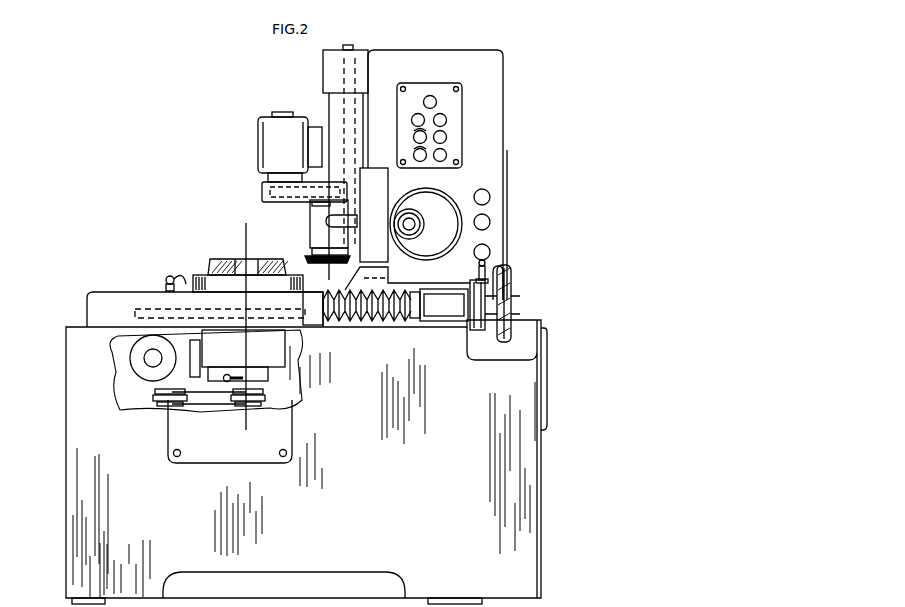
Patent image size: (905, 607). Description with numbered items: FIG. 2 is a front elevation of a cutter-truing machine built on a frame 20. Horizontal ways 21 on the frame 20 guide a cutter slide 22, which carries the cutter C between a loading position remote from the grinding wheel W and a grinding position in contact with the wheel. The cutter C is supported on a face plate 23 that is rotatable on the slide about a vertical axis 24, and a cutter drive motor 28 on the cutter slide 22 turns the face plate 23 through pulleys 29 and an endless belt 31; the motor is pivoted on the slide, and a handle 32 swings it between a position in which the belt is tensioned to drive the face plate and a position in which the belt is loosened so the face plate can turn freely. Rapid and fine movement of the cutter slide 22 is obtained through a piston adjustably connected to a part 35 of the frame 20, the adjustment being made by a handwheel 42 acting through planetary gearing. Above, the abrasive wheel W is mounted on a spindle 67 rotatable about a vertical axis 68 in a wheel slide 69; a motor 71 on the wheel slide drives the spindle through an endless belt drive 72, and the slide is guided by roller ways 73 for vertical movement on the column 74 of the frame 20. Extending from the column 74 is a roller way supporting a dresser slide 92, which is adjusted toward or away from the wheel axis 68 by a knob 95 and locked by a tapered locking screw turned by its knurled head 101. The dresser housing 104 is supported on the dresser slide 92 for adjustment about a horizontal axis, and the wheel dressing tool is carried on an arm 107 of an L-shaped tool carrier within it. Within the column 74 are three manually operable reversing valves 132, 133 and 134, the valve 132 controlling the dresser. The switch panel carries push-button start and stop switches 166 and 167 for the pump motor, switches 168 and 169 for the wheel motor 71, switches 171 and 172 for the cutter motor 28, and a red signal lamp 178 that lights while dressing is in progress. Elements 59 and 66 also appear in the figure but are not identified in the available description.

The frame 20 is at (372, 460).
The horizontal ways 21 is at (147, 308).
The cutter slide 22 is at (92, 308).
The face plate 23 is at (207, 280).
The vertical axis 24 is at (247, 430).
The cutter drive motor 28 is at (137, 362).
The pulleys 29 is at (158, 408).
The endless belt 31 is at (205, 404).
The handle 32 is at (168, 277).
The part of frame 35 is at (443, 321).
The handwheel 42 is at (511, 297).
The switch lever 59 is at (500, 267).
The feed screw 66 is at (360, 321).
The spindle 67 is at (316, 249).
The vertical axis 68 is at (327, 211).
The wheel slide 69 is at (329, 113).
The wheel motor 71 is at (268, 138).
The endless belt drive 72 is at (262, 190).
The roller ways 73 is at (346, 74).
The column 74 is at (497, 73).
The dresser slide 92 is at (442, 198).
The knob 95 is at (413, 232).
The knurled head 101 is at (410, 222).
The dresser housing 104 is at (382, 197).
The arm of tool carrier 107 is at (355, 218).
The reversing valve 132 is at (491, 251).
The reversing valve 133 is at (491, 222).
The reversing valve 134 is at (491, 196).
The start switch 166 is at (417, 113).
The stop switch 167 is at (446, 117).
The switch 168 is at (413, 136).
The switch 169 is at (447, 136).
The switch 171 is at (413, 156).
The switch 172 is at (447, 156).
The red signal lamp 178 is at (430, 95).
The cutter C is at (222, 263).
The grinding wheel W is at (326, 273).